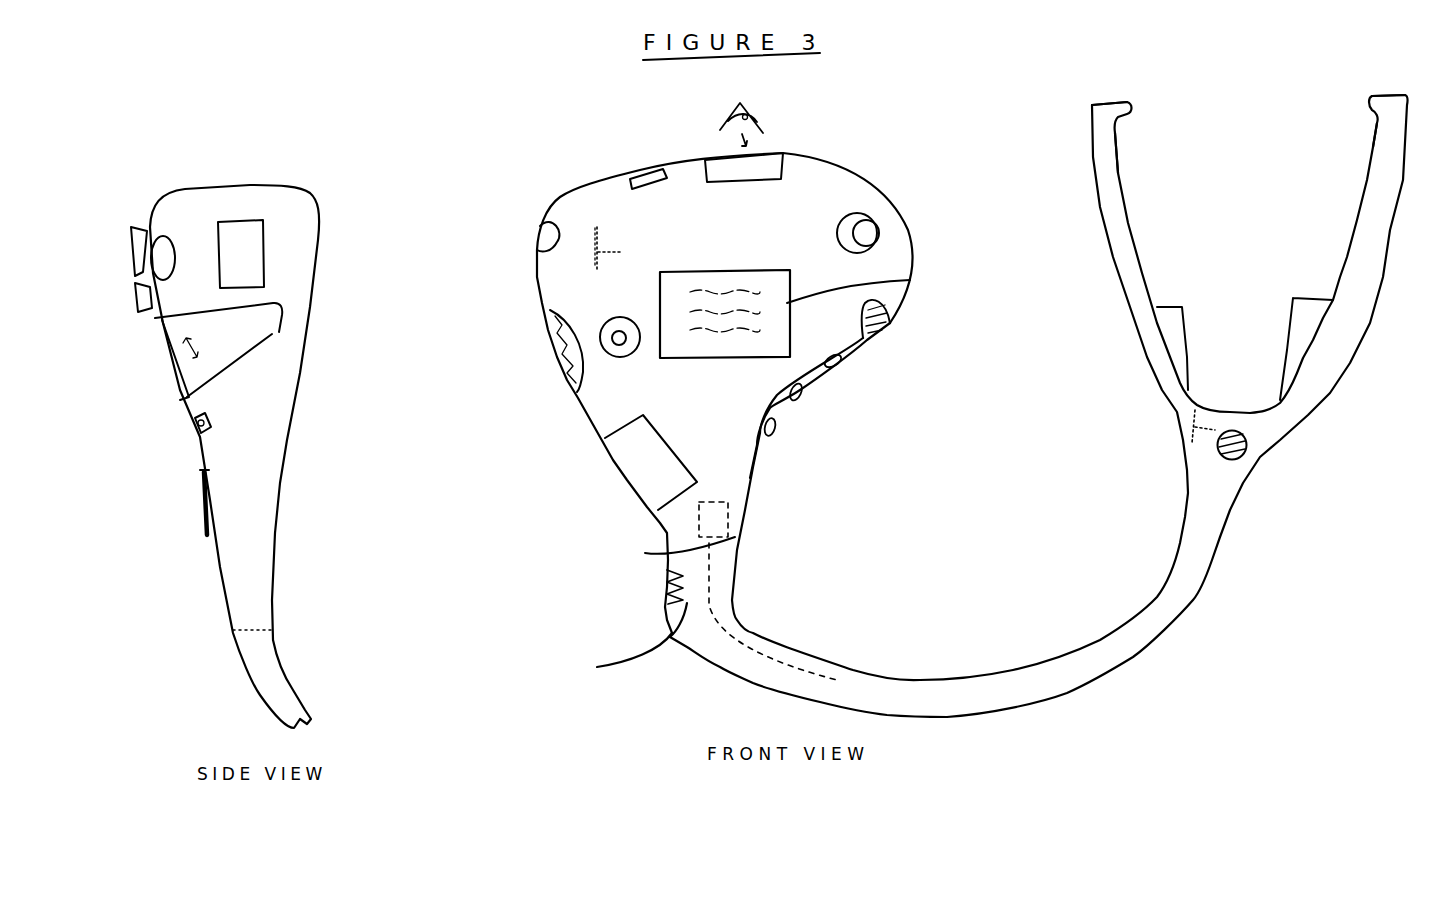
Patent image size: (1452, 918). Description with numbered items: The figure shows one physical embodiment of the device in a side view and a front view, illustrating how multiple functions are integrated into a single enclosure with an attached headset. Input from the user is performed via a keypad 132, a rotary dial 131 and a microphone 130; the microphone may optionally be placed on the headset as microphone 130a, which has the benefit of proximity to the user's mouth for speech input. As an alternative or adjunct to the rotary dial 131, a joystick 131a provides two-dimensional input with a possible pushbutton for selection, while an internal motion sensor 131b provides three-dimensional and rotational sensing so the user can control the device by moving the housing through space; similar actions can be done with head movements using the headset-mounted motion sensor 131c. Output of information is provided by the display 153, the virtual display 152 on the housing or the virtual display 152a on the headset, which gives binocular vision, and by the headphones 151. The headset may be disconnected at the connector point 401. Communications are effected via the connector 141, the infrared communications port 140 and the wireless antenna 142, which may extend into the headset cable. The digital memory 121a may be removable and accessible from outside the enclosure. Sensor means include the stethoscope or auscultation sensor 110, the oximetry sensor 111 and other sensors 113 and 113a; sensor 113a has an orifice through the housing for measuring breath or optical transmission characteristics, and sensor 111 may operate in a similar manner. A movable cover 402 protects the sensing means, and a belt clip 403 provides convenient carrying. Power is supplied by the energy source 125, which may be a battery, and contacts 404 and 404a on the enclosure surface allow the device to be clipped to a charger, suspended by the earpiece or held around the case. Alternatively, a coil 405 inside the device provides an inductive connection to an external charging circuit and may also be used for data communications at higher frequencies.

The stethoscope or auscultation sensor 110 is at (130, 247).
The oximetry sensor 111 is at (163, 250).
The digital memory 121a is at (265, 253).
The movable cover 402 is at (266, 332).
The other sensor 113 is at (143, 302).
The connector 141 is at (197, 423).
The belt clip 403 is at (200, 503).
The infrared communications port 140 is at (648, 170).
The virtual display 152 is at (772, 153).
The other sensor with orifice 113a is at (880, 228).
The display 153 is at (908, 280).
The microphone 130 is at (887, 322).
The keypad 132 is at (795, 410).
The internal motion sensor 131b is at (597, 255).
The rotary dial 131 is at (563, 343).
The joystick 131a is at (616, 358).
The energy source 125 is at (623, 473).
The wireless communications means and antenna 142 is at (727, 540).
The contact 404a is at (663, 538).
The coil 405 is at (662, 590).
The connector point 401 is at (609, 659).
The headphones 151 is at (1360, 95).
The contact 404 is at (1377, 122).
The virtual display on headset 152a is at (1300, 293).
The headset-mounted motion sensor 131c is at (1200, 428).
The headset microphone 130a is at (1217, 452).